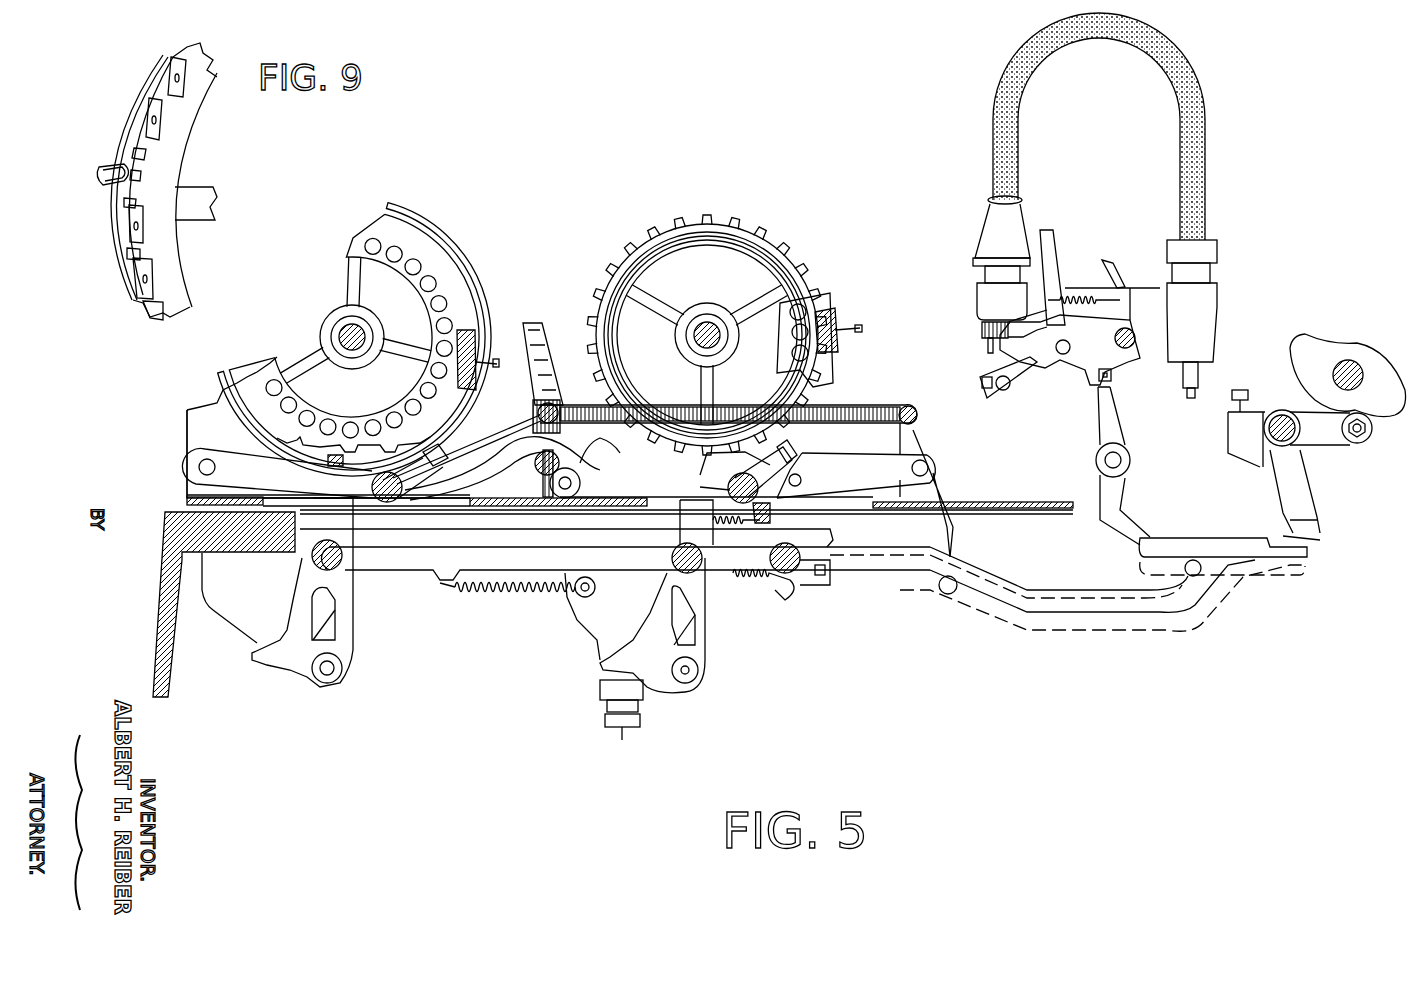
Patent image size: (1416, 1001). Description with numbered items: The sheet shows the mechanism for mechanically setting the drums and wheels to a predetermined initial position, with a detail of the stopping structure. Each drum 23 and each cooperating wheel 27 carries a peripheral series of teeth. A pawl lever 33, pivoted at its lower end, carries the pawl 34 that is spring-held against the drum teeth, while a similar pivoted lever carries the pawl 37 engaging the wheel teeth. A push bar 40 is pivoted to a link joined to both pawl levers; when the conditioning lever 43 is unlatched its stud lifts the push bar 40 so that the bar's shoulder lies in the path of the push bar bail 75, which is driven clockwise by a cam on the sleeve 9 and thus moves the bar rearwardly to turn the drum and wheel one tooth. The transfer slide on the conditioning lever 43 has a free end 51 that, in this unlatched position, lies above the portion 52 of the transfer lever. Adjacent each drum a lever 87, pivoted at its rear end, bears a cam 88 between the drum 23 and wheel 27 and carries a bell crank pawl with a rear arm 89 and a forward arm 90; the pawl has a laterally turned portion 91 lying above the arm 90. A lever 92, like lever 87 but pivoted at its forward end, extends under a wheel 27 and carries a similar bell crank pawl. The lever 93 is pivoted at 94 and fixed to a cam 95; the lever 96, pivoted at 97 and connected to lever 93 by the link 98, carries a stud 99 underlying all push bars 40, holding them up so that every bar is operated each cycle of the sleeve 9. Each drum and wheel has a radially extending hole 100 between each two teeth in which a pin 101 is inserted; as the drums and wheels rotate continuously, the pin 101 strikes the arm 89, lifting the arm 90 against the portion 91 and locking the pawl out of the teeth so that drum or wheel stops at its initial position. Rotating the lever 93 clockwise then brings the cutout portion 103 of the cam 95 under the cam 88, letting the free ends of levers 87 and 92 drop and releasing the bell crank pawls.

In FIG. 5, the sleeve 9 is at (1360, 370).
In FIG. 5, the drum 23 is at (430, 245).
In FIG. 5, the wheel 27 is at (700, 225).
In FIG. 5, the pawl lever 33 is at (345, 622).
In FIG. 5, the pawl 34 is at (336, 455).
In FIG. 5, the pawl 37 is at (690, 462).
In FIG. 5, the push bar 40 is at (1088, 615).
In FIG. 5, the conditioning lever 43 is at (1105, 262).
In FIG. 5, the free end of transfer slide 51 is at (980, 330).
In FIG. 5, the portion of transfer lever 52 is at (985, 360).
In FIG. 5, the push bar bail 75 is at (1312, 530).
In FIG. 5, the lever 87 is at (232, 467).
In FIG. 5, the cam 88 is at (545, 472).
In FIG. 5, the rear arm of bell crank pawl 89 is at (295, 462).
In FIG. 5, the forward arm of bell crank pawl 90 is at (440, 462).
In FIG. 5, the laterally turned portion 91 is at (470, 417).
In FIG. 5, the lever 92 is at (850, 470).
In FIG. 5, the lever 93 is at (548, 325).
In FIG. 5, the pivot 94 is at (570, 498).
In FIG. 5, the cam 95 is at (581, 483).
In FIG. 5, the lever 96 is at (945, 532).
In FIG. 5, the pivot 97 is at (930, 466).
In FIG. 5, the link 98 is at (835, 410).
In FIG. 5, the stud 99 is at (940, 592).
In FIG. 9, the radially extending hole 100 is at (182, 126).
In FIG. 9, the pin 101 is at (108, 165).
In FIG. 5, the pin 101 is at (492, 352).
In FIG. 5, the cutout portion 103 is at (530, 500).